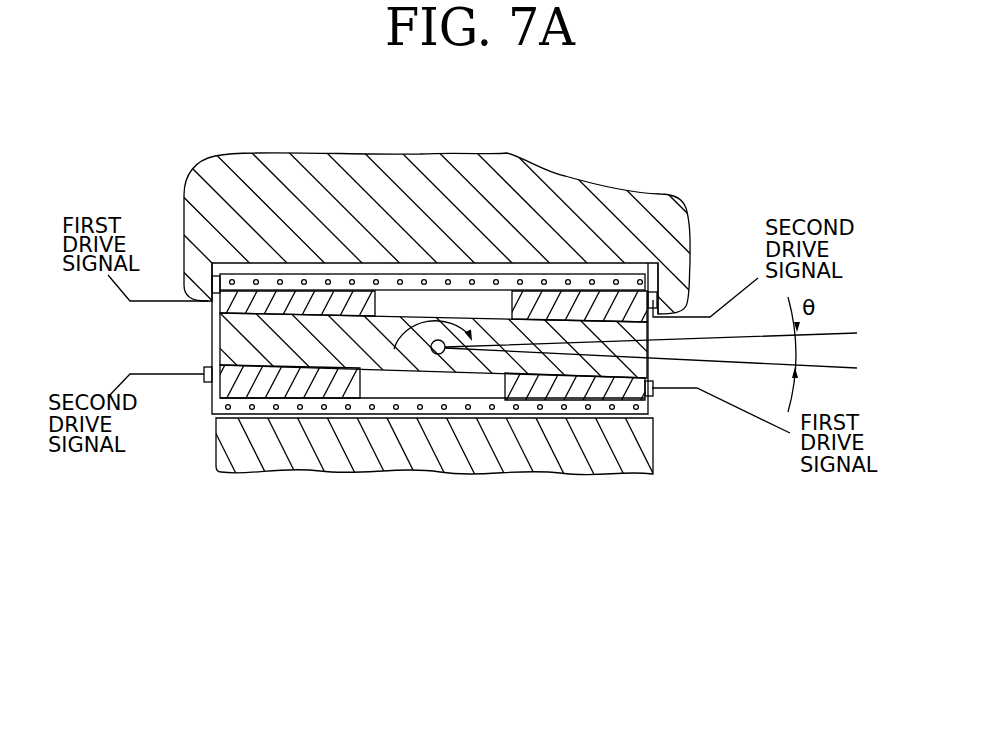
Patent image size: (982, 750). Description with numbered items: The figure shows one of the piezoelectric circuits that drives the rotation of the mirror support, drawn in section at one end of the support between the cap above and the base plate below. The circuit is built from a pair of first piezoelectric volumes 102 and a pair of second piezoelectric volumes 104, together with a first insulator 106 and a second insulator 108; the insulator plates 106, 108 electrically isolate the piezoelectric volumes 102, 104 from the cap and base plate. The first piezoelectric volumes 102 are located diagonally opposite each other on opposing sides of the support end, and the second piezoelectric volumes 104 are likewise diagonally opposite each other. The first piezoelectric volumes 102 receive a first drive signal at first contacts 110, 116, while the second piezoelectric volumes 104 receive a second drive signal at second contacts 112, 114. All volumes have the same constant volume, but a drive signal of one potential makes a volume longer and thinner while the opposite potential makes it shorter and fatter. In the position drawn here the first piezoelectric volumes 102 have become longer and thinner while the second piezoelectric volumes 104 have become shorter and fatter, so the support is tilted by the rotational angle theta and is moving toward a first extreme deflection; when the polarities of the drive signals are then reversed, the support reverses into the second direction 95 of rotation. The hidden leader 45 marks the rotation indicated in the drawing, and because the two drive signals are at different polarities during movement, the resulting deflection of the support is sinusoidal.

The tilt rotation direction 45 is at (395, 349).
The second direction of rotation 95 is at (438, 307).
The first piezoelectric volumes 102 is at (253, 287).
The second piezoelectric volumes 104 is at (580, 293).
The first insulator 106 is at (655, 300).
The second insulator 108 is at (474, 404).
The first contact 110 is at (212, 304).
The second contact 112 is at (211, 383).
The second contact 114 is at (661, 294).
The first contact 116 is at (653, 386).